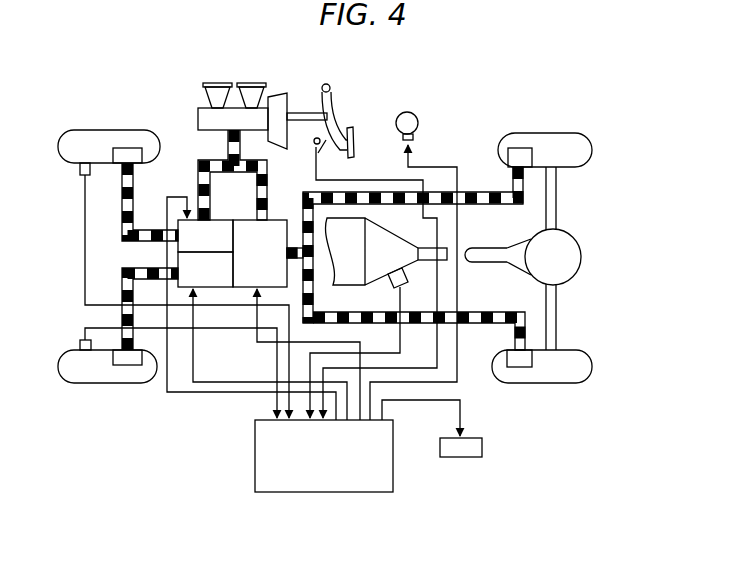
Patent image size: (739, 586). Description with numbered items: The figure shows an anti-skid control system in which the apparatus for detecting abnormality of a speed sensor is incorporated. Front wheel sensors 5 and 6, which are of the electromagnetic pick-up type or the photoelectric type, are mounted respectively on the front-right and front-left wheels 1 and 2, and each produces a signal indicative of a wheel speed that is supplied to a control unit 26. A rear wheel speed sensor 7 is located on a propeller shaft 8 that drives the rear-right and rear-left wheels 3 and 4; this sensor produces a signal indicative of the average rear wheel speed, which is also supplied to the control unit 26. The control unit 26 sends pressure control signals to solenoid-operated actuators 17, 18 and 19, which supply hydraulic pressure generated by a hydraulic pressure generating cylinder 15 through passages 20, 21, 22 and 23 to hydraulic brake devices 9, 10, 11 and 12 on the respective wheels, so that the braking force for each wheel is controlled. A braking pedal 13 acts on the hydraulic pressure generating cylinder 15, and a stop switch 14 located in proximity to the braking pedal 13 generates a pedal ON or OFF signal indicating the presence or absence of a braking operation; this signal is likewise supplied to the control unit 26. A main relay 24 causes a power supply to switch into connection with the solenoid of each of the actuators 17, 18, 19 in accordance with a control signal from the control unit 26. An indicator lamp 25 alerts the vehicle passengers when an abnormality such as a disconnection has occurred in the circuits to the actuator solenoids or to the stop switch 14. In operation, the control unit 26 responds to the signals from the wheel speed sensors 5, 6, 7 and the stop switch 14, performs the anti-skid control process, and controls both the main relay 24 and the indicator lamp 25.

The front-right wheel 1 is at (128, 131).
The front-left wheel 2 is at (95, 385).
The rear-right wheel 3 is at (558, 132).
The rear-left wheel 4 is at (556, 384).
The front wheel sensor 5 is at (80, 172).
The front wheel sensor 6 is at (80, 342).
The rear wheel speed sensor 7 is at (403, 283).
The propeller shaft 8 is at (427, 248).
The hydraulic brake device 9 is at (141, 148).
The hydraulic brake device 10 is at (130, 366).
The hydraulic brake device 11 is at (518, 148).
The hydraulic brake device 12 is at (522, 368).
The braking pedal 13 is at (338, 114).
The stop switch 14 is at (313, 151).
The hydraulic pressure generating cylinder 15 is at (200, 108).
The solenoid-operated actuator 17 is at (205, 236).
The solenoid-operated actuator 18 is at (205, 269).
The solenoid-operated actuator 19 is at (268, 253).
The passage 20 is at (121, 190).
The passage 21 is at (120, 288).
The passage 22 is at (477, 190).
The passage 23 is at (512, 312).
The main relay 24 is at (462, 457).
The indicator lamp 25 is at (412, 112).
The control unit 26 is at (366, 493).